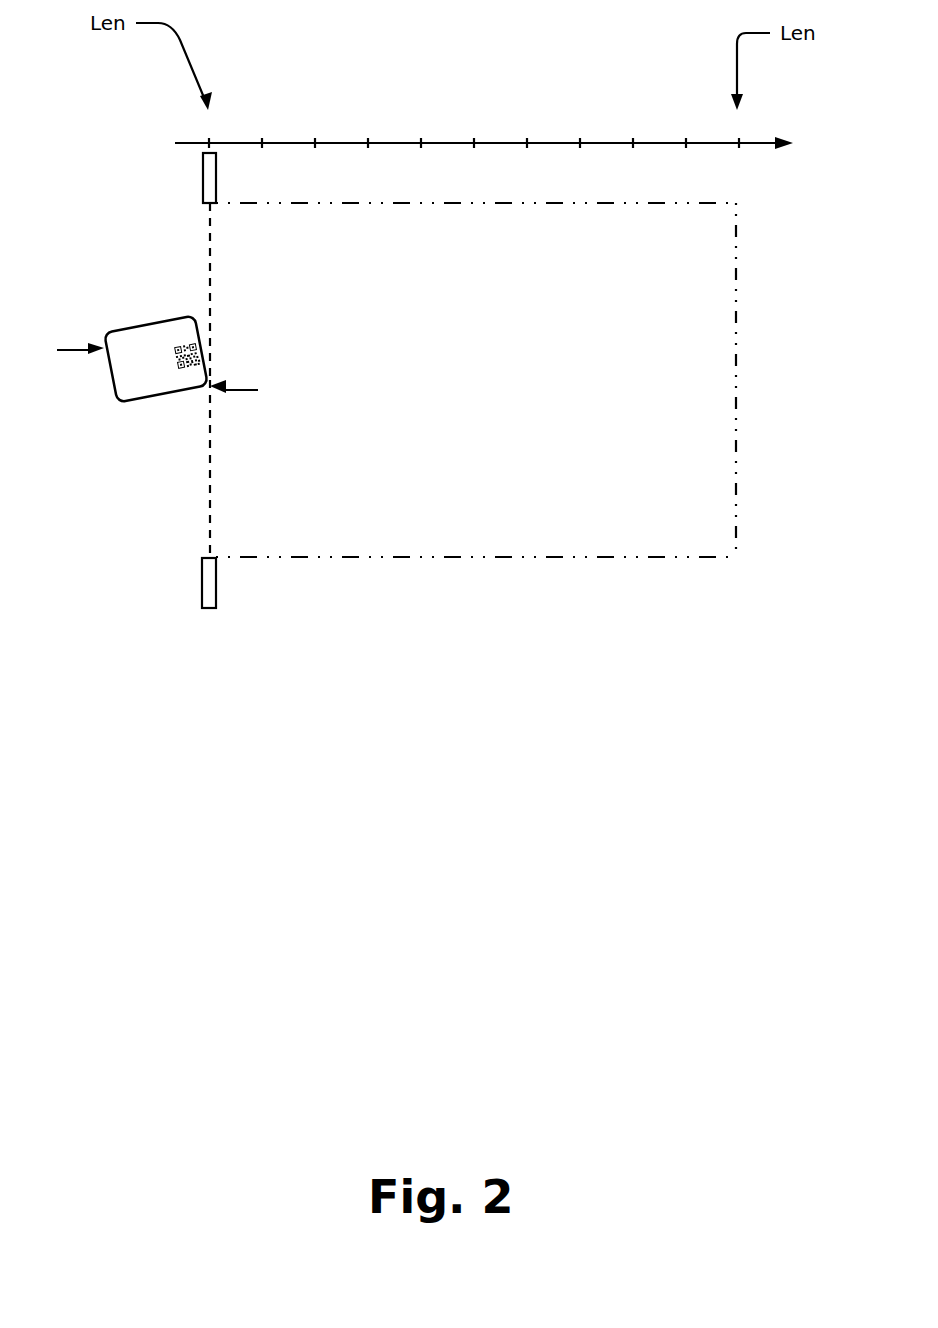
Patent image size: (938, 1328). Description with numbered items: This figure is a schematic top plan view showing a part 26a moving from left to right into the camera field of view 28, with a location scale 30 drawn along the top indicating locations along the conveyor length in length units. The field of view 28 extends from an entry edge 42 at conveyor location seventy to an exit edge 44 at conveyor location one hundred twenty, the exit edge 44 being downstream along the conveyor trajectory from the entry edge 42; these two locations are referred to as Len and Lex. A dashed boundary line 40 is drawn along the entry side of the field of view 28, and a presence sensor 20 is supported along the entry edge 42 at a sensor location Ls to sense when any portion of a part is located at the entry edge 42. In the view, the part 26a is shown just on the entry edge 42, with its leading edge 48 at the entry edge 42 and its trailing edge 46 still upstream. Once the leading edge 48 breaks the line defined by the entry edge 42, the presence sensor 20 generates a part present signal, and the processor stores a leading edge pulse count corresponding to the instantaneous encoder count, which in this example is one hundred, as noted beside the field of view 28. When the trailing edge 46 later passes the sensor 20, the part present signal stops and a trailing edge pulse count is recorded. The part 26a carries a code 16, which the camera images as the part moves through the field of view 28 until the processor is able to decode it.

The location scale 30 is at (446, 143).
The leading image boundary 40 is at (210, 262).
The entry edge 42 is at (210, 515).
The exit edge 44 is at (737, 510).
The field of view 28 is at (702, 372).
The presence sensor 20 is at (202, 583).
The part 26a is at (162, 362).
The code 16 is at (186, 355).
The trailing edge 46 is at (65, 348).
The leading edge 48 is at (250, 388).